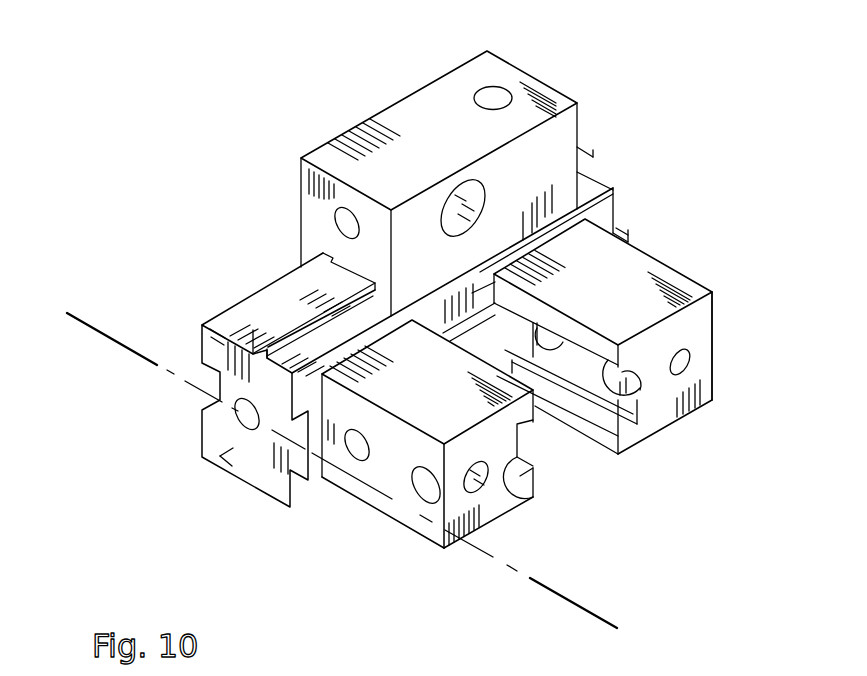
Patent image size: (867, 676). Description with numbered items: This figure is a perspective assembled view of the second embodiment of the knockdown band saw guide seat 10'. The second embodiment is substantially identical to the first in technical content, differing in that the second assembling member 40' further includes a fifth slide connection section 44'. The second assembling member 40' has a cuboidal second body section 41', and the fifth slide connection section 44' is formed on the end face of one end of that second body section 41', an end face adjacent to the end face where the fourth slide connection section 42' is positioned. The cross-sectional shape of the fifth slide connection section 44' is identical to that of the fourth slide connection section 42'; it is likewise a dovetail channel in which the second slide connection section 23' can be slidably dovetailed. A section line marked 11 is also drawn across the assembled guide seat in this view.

The knockdown band saw guide seat 10' is at (552, 316).
The second assembling member 40' is at (533, 383).
The second body section 41' is at (633, 470).
The fourth slide connection section 42' is at (622, 467).
The second slide connection section 23' is at (288, 423).
The fifth slide connection section 44' is at (331, 443).
The section line 11- 11 is at (93, 328).